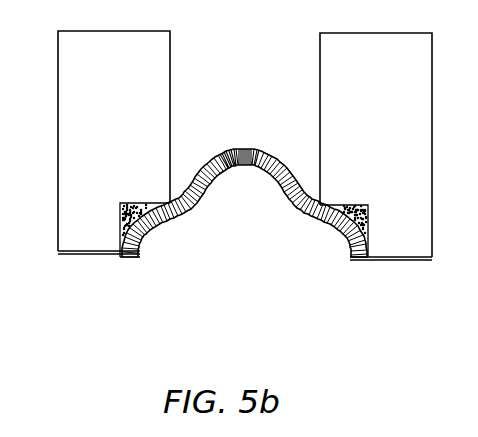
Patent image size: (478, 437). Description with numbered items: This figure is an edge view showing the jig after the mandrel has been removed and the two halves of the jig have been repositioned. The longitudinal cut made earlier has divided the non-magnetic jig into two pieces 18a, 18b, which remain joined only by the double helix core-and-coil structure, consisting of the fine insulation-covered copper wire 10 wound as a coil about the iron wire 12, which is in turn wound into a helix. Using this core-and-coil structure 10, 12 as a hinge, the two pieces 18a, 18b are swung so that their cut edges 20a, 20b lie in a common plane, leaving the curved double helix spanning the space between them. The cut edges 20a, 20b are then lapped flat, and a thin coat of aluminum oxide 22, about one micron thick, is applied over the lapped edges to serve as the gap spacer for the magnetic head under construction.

The insulation-covered copper wire 10 is at (208, 158).
The iron wire 12 is at (262, 155).
The jig piece 18a is at (119, 145).
The jig piece 18b is at (392, 146).
The cut edge 20a is at (100, 255).
The cut edge 20b is at (385, 261).
The aluminum oxide coat 22 is at (70, 255).